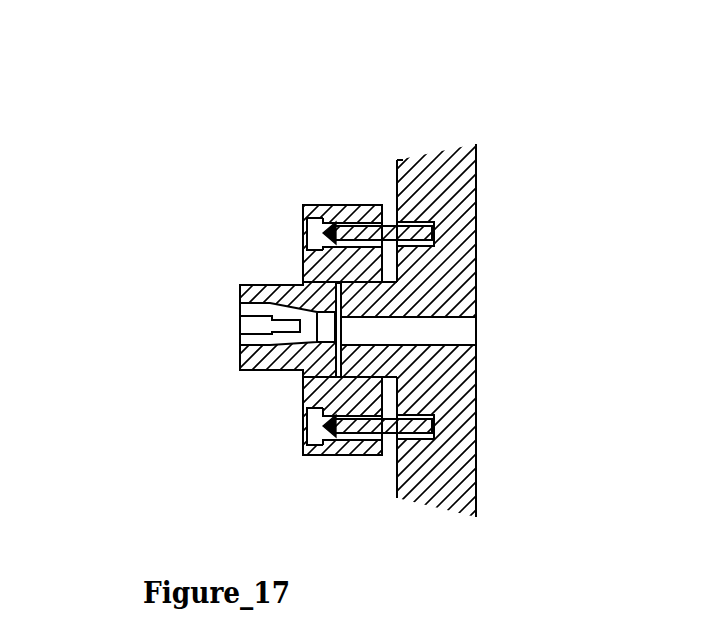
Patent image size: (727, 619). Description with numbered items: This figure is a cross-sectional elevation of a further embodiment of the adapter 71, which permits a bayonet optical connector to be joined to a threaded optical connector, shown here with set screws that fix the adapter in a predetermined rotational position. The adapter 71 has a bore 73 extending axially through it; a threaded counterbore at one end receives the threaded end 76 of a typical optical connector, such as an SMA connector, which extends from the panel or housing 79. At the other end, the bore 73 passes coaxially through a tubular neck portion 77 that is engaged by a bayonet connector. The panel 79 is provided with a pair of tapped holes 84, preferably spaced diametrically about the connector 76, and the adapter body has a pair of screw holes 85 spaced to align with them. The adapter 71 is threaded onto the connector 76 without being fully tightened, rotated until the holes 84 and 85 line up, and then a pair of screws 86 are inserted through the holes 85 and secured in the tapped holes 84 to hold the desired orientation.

The adapter 71 is at (328, 205).
The bore 73 is at (240, 343).
The threaded end of optical connector 76 is at (303, 275).
The tubular neck portion 77 is at (240, 362).
The panel or housing 79 is at (427, 160).
The tapped holes 84 is at (433, 236).
The screw holes 85 is at (337, 455).
The screws 86 is at (303, 420).